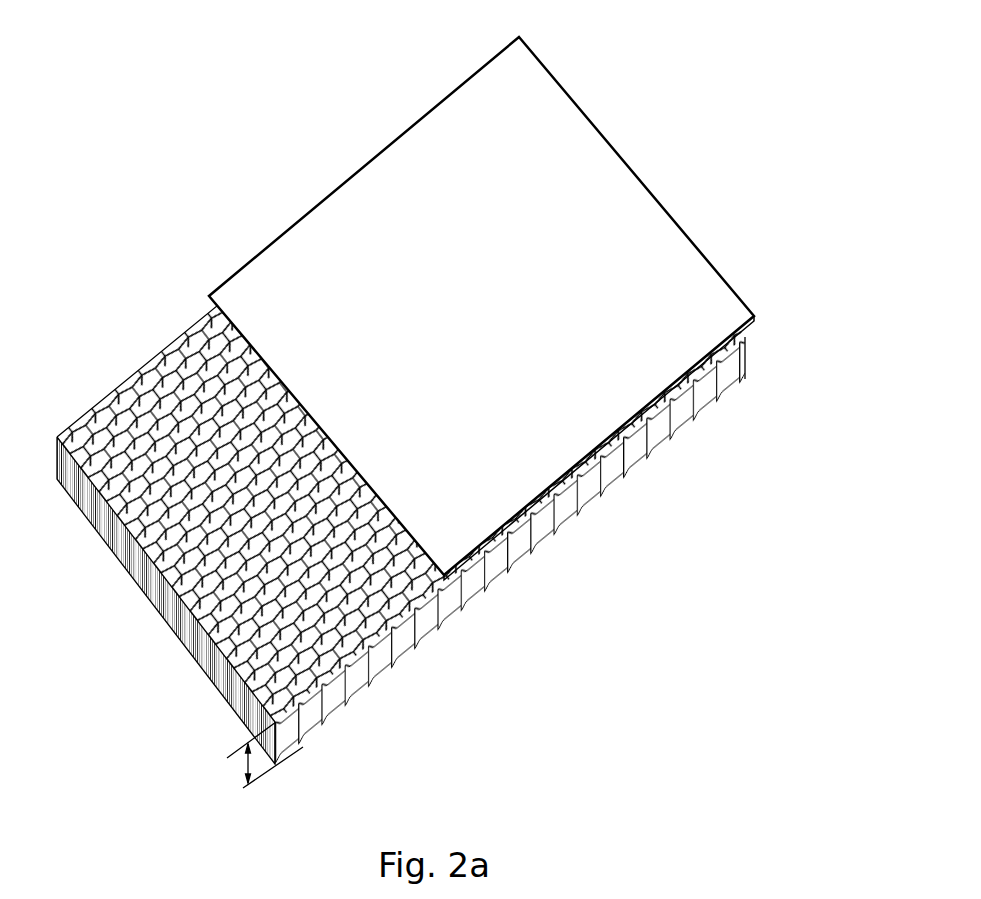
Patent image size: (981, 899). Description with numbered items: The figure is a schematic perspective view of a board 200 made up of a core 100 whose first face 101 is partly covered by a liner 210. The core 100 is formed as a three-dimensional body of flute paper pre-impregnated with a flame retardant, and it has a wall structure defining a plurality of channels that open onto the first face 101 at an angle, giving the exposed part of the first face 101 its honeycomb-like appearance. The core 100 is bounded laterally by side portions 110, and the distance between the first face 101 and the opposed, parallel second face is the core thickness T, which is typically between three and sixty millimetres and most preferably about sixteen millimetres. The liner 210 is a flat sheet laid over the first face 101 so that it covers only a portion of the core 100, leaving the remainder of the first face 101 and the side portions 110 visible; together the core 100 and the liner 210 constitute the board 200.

The core 100 is at (193, 323).
The first face 101 is at (185, 398).
The side portions 110 is at (178, 620).
The board 200 is at (722, 177).
The liner 210 is at (492, 503).
The core thickness T is at (265, 755).